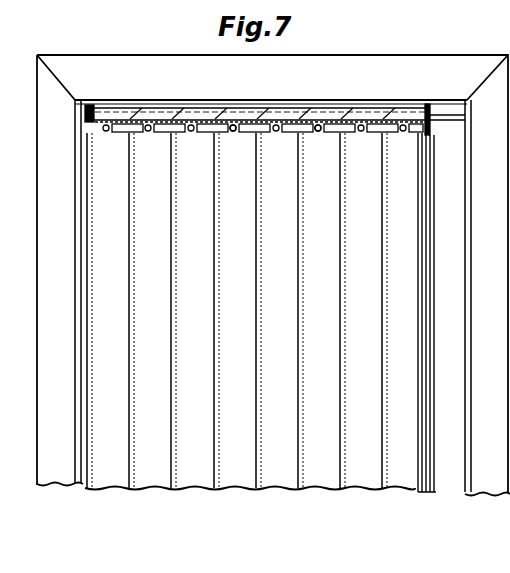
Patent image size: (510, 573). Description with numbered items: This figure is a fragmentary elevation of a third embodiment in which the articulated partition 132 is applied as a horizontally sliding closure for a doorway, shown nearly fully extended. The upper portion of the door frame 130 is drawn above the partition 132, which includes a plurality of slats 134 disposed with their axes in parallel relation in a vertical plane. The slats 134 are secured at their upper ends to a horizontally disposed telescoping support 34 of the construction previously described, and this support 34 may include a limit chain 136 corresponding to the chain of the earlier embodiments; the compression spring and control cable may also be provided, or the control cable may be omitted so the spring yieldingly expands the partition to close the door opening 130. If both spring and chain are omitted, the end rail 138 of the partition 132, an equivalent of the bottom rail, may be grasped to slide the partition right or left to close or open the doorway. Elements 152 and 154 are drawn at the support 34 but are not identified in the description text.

The door frame 130 is at (418, 75).
The telescoping support 34 is at (185, 113).
The limit chain 136 is at (262, 133).
The hook 154 is at (232, 131).
The clip 152 is at (320, 131).
The slats 134 is at (230, 475).
The articulated partition 132 is at (283, 478).
The end rail 138 is at (428, 262).